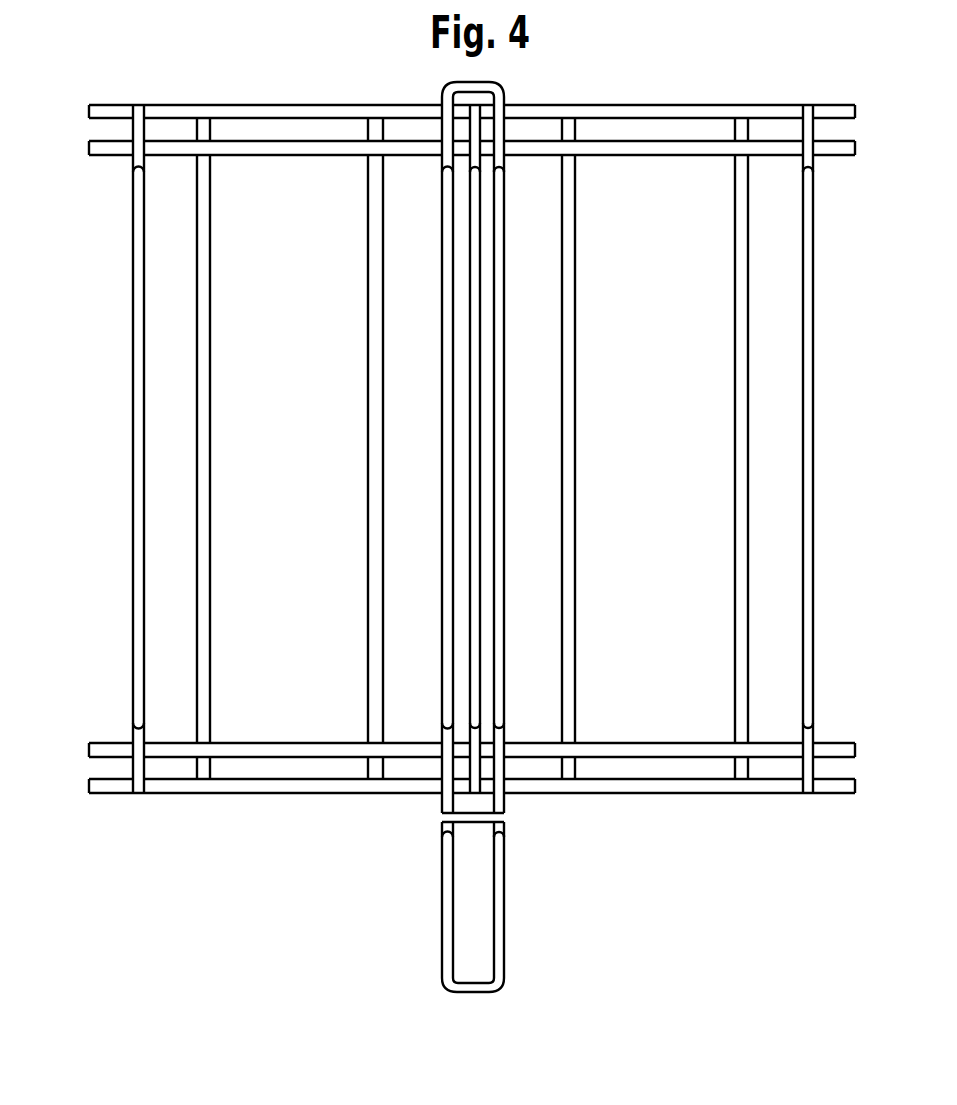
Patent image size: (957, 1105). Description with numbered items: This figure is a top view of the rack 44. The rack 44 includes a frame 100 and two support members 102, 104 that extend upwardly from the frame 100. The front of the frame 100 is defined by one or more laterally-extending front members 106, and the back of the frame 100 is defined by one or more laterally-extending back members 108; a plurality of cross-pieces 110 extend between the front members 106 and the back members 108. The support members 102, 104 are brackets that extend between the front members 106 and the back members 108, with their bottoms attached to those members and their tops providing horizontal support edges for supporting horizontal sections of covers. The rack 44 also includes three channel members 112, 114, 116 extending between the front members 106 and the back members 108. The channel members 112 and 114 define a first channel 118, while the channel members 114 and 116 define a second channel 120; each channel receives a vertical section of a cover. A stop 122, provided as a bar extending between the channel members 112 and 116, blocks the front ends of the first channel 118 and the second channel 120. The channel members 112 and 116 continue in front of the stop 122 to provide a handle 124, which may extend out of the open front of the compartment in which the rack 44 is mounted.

The rack 44 is at (240, 1000).
The frame 100 is at (252, 797).
The support member 102 is at (133, 465).
The support member 104 is at (814, 585).
The front member 106 is at (704, 793).
The back member 108 is at (708, 105).
The cross-piece 110 is at (207, 441).
The channel member 112 is at (442, 655).
The channel member 114 is at (477, 635).
The channel member 116 is at (505, 698).
The first channel 118 is at (458, 767).
The second channel 120 is at (487, 763).
The stop 122 is at (467, 823).
The handle 124 is at (467, 992).